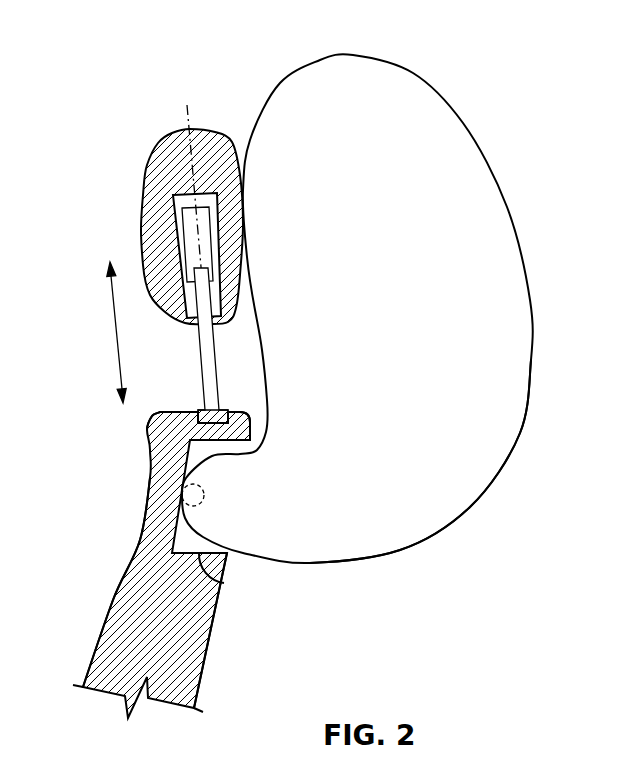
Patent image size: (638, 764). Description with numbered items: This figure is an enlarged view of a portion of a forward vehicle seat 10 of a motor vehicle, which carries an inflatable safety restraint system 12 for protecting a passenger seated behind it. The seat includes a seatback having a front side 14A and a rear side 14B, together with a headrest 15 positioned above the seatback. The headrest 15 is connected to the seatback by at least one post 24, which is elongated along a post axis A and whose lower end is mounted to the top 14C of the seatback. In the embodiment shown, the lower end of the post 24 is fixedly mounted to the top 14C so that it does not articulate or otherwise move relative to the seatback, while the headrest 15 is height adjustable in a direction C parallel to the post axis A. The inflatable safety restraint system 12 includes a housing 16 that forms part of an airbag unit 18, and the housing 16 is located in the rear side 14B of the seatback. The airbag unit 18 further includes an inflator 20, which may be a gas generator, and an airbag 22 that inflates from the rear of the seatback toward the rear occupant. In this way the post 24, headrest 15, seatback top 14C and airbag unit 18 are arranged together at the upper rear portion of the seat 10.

The vehicle seat 10 is at (80, 664).
The inflatable safety restraint system 12 is at (514, 60).
The front side 14A is at (105, 622).
The rear side 14B is at (205, 668).
The top of the seatback 14C is at (167, 410).
The headrest 15 is at (157, 147).
The housing 16 is at (222, 585).
The airbag unit 18 is at (410, 557).
The inflator 20 is at (188, 482).
The airbag 22 is at (520, 432).
The post 24 is at (205, 387).
The post axis A is at (200, 125).
The direction of height adjustment C is at (113, 333).